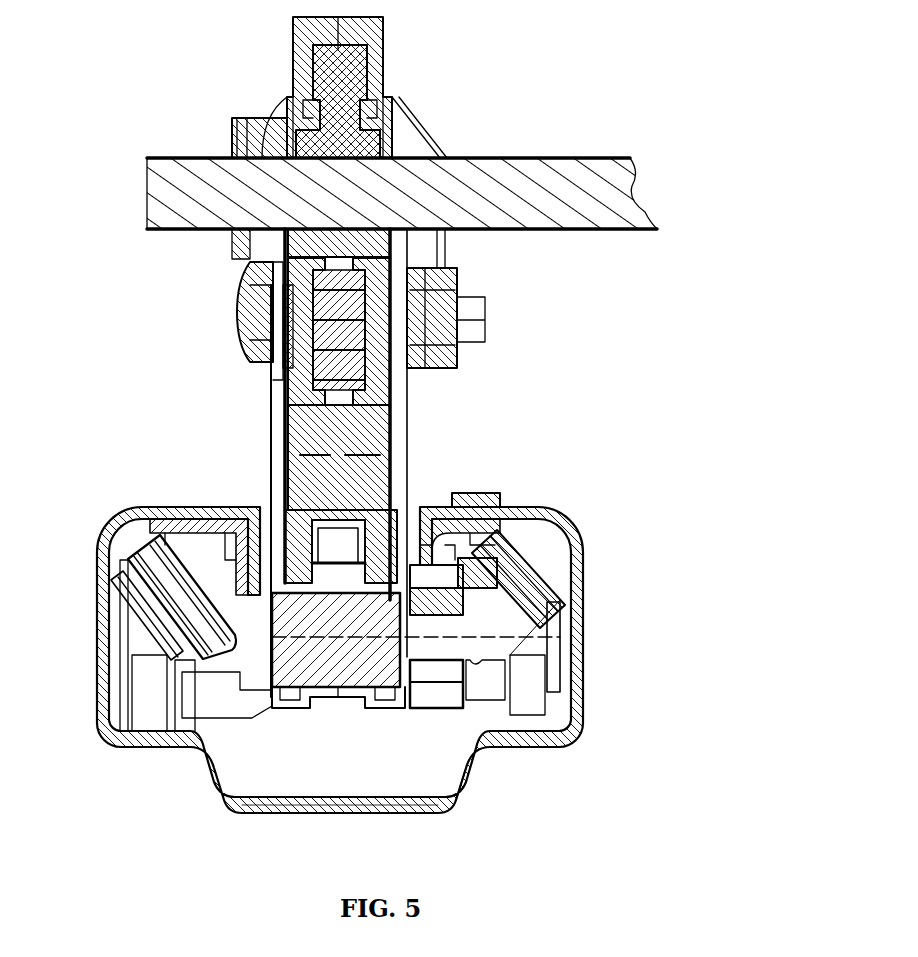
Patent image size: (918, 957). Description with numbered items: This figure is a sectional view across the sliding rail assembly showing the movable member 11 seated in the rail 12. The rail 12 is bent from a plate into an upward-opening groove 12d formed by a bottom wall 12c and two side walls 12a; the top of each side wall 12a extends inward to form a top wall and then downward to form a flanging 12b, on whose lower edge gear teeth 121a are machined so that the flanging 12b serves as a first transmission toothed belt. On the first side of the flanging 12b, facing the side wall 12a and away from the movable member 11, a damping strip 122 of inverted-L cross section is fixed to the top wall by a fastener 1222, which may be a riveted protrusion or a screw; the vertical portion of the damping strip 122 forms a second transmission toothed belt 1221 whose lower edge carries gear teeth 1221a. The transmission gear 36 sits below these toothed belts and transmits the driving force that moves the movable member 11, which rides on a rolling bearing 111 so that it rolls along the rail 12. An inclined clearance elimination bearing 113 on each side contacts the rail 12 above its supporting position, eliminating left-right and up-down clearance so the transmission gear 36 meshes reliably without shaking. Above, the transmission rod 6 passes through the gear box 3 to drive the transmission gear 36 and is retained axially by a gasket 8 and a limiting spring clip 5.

The gear box 3 is at (363, 42).
The transmission rod 6 is at (510, 205).
The gasket 8 is at (273, 147).
The limiting spring clip 5 is at (237, 262).
The transmission gear 36 is at (427, 613).
The rail 12 is at (582, 580).
The side wall 12a is at (580, 697).
The flanging 12b is at (253, 547).
The bottom wall 12c is at (312, 808).
The groove 12d is at (442, 770).
The movable member 11 is at (162, 568).
The rolling bearing 111 is at (148, 745).
The clearance elimination bearing 113 is at (178, 583).
The gear teeth 121a is at (424, 545).
The damping strip 122 is at (477, 493).
The second transmission toothed belt 1221 is at (500, 580).
The gear teeth 1221a is at (468, 708).
The fastener 1222 is at (470, 492).